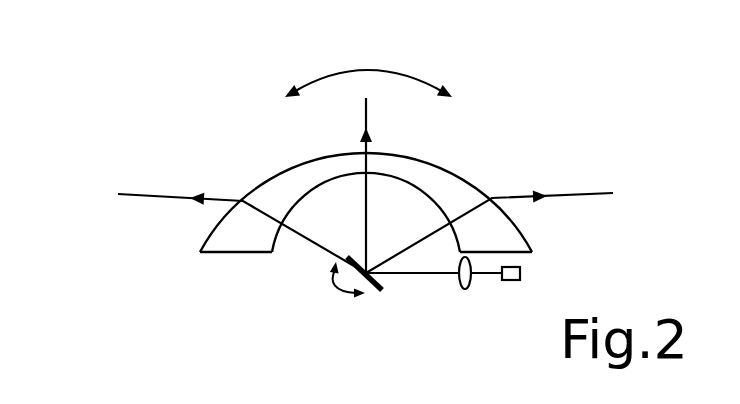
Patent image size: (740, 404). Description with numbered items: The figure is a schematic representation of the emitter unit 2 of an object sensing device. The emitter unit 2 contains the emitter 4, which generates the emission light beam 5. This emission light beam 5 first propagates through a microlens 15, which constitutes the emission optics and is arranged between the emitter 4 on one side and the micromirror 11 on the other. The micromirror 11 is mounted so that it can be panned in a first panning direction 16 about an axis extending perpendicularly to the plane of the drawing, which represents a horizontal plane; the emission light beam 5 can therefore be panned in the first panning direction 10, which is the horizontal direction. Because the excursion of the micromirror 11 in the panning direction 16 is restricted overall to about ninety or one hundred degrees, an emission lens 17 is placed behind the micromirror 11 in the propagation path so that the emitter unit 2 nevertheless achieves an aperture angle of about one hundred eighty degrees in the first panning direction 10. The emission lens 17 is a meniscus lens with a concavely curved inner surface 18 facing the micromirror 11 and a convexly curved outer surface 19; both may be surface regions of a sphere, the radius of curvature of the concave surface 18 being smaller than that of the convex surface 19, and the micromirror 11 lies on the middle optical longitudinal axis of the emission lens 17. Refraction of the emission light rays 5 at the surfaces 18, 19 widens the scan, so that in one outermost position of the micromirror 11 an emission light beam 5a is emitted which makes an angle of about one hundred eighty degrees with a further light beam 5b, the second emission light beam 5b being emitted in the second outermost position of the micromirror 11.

The emitter unit 2 is at (115, 158).
The emitter 4 is at (508, 282).
The emission light beam 5 is at (368, 123).
The emission light beam 5a is at (158, 195).
The second emission light beam 5b is at (573, 195).
The first panning direction 10 is at (367, 72).
The micromirror 11 is at (380, 296).
The microlens 15 is at (467, 290).
The first panning direction of the micromirror 16 is at (337, 286).
The emission lens 17 is at (510, 236).
The concavely curved inner surface 18 is at (410, 183).
The convexly curved outer surface 19 is at (439, 166).